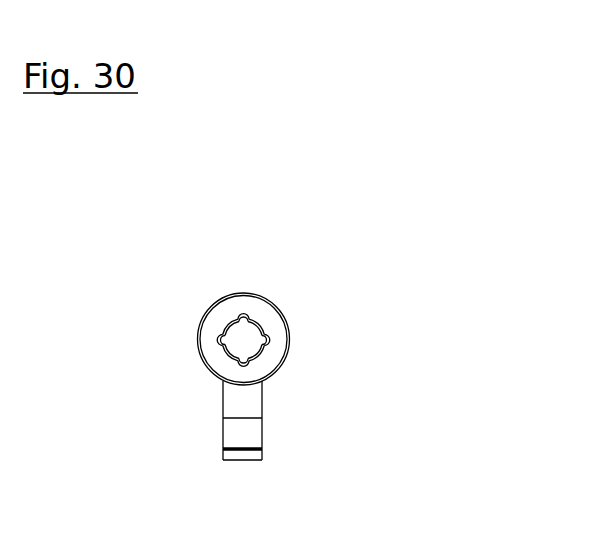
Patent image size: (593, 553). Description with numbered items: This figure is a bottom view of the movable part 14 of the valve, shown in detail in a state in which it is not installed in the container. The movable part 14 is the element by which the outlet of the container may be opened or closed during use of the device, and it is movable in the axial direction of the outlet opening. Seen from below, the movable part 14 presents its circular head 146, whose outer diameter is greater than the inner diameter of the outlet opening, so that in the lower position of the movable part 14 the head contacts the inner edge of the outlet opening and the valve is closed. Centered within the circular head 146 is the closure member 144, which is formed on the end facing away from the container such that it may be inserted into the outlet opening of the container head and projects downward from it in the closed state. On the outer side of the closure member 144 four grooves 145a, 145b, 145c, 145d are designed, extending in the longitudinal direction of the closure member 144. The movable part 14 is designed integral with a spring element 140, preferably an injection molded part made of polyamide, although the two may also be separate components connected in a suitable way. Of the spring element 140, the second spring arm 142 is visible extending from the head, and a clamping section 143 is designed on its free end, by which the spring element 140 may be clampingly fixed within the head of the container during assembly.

The movable part 14 is at (257, 378).
The spring element 140 is at (351, 447).
The second spring arm 142 is at (247, 403).
The clamping section 143 is at (240, 452).
The closure member 144 is at (261, 322).
The groove 145a is at (244, 318).
The groove 145b is at (265, 338).
The groove 145c is at (242, 361).
The groove 145d is at (218, 340).
The circular head 146 is at (268, 363).